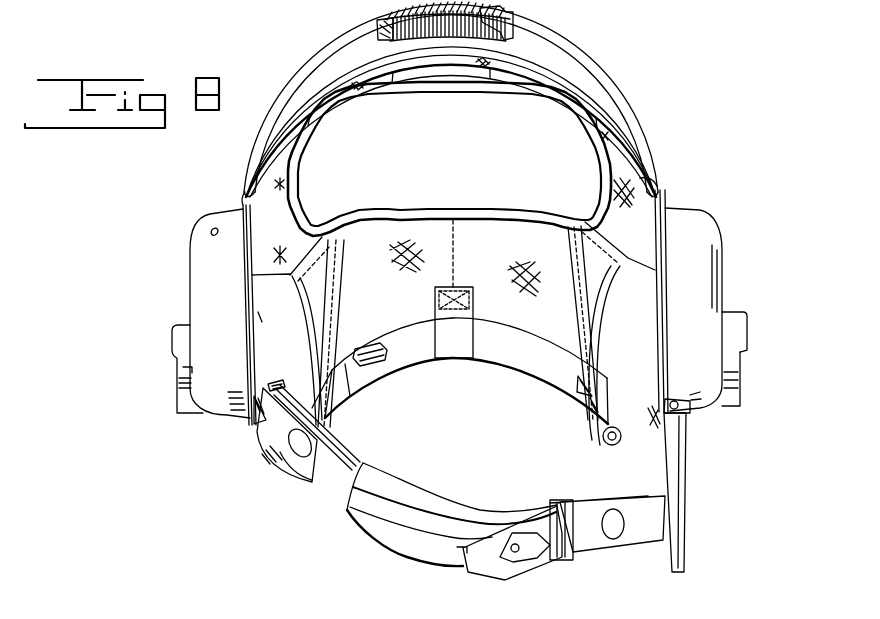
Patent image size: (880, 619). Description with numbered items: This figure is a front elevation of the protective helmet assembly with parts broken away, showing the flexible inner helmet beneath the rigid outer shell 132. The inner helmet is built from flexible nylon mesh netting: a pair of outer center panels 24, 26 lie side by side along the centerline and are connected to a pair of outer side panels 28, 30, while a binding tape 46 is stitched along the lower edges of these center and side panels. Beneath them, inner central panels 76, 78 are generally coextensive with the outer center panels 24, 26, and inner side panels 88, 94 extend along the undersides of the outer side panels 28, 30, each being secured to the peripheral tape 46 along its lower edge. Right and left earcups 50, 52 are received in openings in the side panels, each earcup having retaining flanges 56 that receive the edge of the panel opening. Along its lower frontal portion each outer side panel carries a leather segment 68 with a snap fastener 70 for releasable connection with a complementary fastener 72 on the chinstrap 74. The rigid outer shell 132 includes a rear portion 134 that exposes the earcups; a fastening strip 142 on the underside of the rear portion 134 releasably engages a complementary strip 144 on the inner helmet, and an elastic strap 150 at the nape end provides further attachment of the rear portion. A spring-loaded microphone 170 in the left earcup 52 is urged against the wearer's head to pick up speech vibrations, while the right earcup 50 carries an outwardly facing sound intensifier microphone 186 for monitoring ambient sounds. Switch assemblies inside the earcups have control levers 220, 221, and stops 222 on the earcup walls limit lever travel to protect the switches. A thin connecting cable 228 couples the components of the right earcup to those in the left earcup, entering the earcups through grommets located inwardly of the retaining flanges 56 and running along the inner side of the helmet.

The outer center panel 24 is at (388, 36).
The outer center panel 26 is at (500, 30).
The outer side panel 28 is at (247, 187).
The outer side panel 30 is at (634, 163).
The binding tape 46 is at (308, 224).
The right earcup 50 is at (190, 278).
The left earcup 52 is at (703, 210).
The retaining flange 56 is at (243, 206).
The segment 68 is at (270, 334).
The snap fastener 70 is at (598, 452).
The complementary fastener 72 is at (284, 472).
The chinstrap 74 is at (441, 554).
The inner central panel 76 is at (407, 312).
The inner central panel 78 is at (547, 326).
The inner side panel 88 is at (358, 236).
The inner side panel 94 is at (575, 212).
The rigid outer shell 132 is at (452, 562).
The rear portion 134 is at (592, 70).
The fastening strip 142 is at (380, 10).
The complementary strip 144 is at (437, 34).
The elastic strap 150 is at (461, 352).
The spring-loaded microphone 170 is at (578, 392).
The sound intensifier microphone 186 is at (213, 230).
The control lever 220 is at (178, 416).
The control lever 221 is at (742, 407).
The stop 222 is at (745, 350).
The connecting cable 228 is at (376, 365).